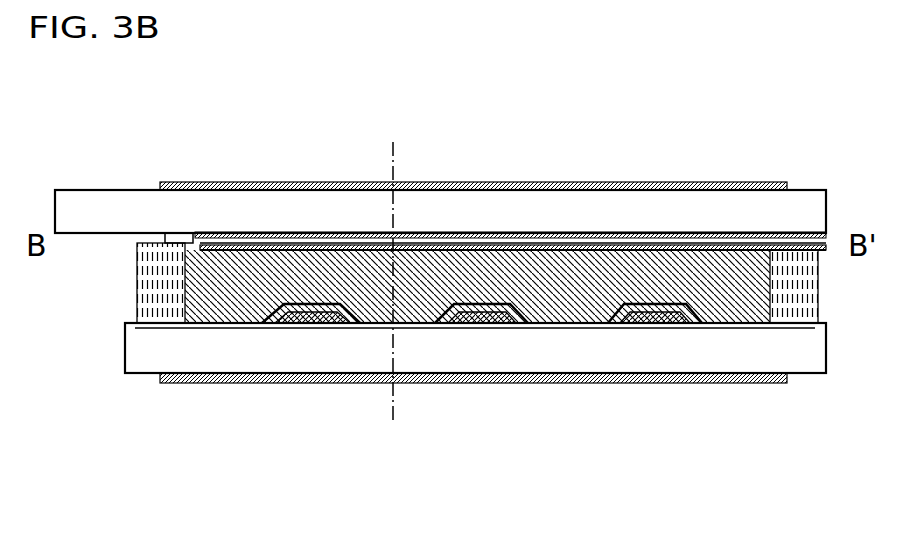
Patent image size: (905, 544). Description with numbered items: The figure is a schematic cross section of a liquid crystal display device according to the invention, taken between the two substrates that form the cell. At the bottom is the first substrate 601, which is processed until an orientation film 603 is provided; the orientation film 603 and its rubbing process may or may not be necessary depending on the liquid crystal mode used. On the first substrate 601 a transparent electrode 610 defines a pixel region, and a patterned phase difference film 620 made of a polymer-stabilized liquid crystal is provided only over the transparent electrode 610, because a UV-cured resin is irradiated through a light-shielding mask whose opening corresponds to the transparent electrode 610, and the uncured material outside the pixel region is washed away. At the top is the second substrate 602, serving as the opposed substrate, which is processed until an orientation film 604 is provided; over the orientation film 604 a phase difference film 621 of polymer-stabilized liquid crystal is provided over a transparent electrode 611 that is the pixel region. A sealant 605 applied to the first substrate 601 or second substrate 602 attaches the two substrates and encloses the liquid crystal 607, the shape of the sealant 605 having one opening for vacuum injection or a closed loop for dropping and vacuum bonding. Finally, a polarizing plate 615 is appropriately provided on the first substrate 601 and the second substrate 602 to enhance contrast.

The first substrate 601 is at (630, 368).
The second substrate 602 is at (118, 203).
The orientation film 603 is at (547, 327).
The orientation film 604 is at (513, 252).
The sealant 605 is at (155, 310).
The liquid crystal 607 is at (260, 308).
The transparent electrode 610 is at (318, 332).
The transparent electrode 611 is at (292, 233).
The polarizing plate 615 is at (466, 185).
The phase difference film 620 is at (435, 332).
The phase difference film 621 is at (682, 252).